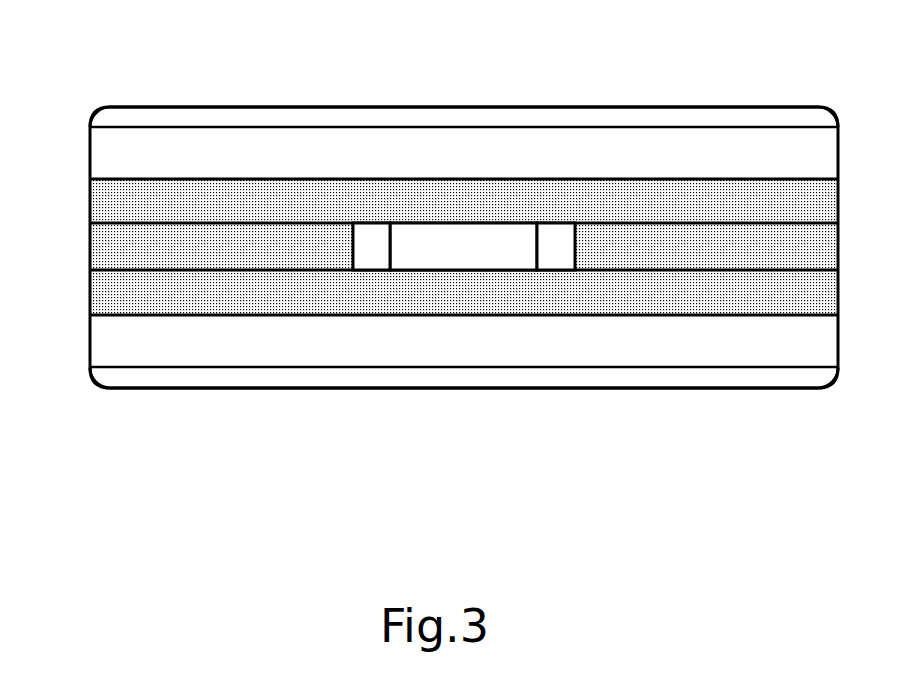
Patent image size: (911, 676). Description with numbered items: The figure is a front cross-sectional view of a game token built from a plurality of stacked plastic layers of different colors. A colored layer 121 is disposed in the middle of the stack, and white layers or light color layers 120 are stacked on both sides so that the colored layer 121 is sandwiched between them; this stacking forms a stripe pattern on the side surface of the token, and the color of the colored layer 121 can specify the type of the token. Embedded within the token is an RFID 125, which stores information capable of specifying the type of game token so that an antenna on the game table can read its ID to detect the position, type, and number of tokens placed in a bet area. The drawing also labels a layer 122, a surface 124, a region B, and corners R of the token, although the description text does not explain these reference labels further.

The white layer or light color layer 120 is at (752, 107).
The colored layer 121 is at (82, 179).
The cladding layer 122 is at (88, 155).
The outer surface 124 is at (222, 116).
The RFID 125 is at (462, 245).
The boundary region B is at (368, 245).
The rounded corner R is at (95, 110).